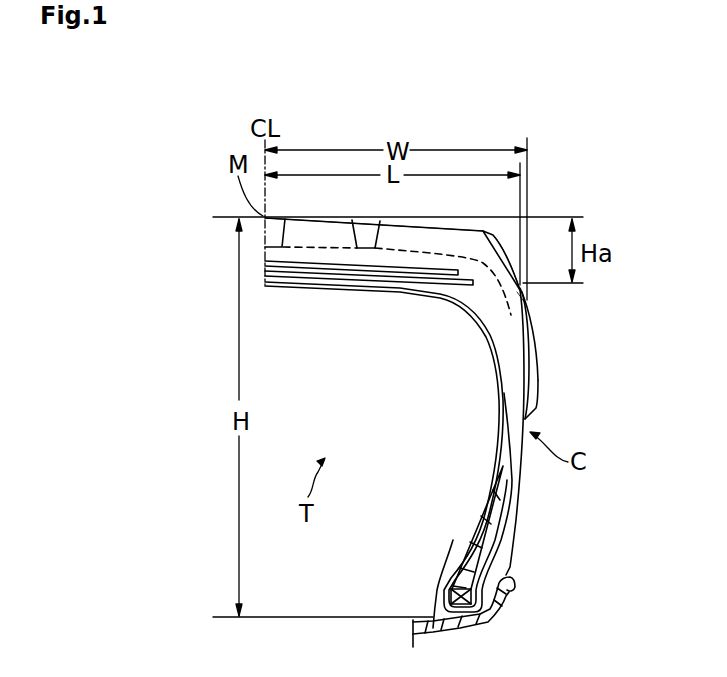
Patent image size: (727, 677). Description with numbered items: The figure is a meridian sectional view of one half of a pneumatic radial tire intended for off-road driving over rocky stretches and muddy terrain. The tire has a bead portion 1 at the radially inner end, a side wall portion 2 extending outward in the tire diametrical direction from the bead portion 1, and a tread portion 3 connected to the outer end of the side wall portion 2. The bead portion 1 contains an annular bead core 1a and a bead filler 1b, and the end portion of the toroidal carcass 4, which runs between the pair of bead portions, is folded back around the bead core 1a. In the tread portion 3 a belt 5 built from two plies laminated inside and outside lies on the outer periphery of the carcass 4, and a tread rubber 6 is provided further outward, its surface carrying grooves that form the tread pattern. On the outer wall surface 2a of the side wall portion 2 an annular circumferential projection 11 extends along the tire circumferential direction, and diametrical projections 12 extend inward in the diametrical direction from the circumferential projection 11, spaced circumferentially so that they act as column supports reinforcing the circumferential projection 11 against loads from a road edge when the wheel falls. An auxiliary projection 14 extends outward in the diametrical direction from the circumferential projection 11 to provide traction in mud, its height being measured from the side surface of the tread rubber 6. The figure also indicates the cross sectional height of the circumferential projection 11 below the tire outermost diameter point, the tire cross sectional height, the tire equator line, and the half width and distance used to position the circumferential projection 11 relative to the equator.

The bead portion 1 is at (533, 563).
The bead core 1a is at (451, 597).
The bead filler 1b is at (468, 536).
The side wall portion 2 is at (553, 413).
The outer wall surface 2a is at (523, 376).
The tread portion 3 is at (333, 207).
The carcass 4 is at (372, 280).
The belt 5 is at (322, 268).
The tread rubber 6 is at (442, 229).
The circumferential projection 11 is at (525, 302).
The diametrical projection 12 is at (533, 344).
The auxiliary projection 14 is at (502, 250).